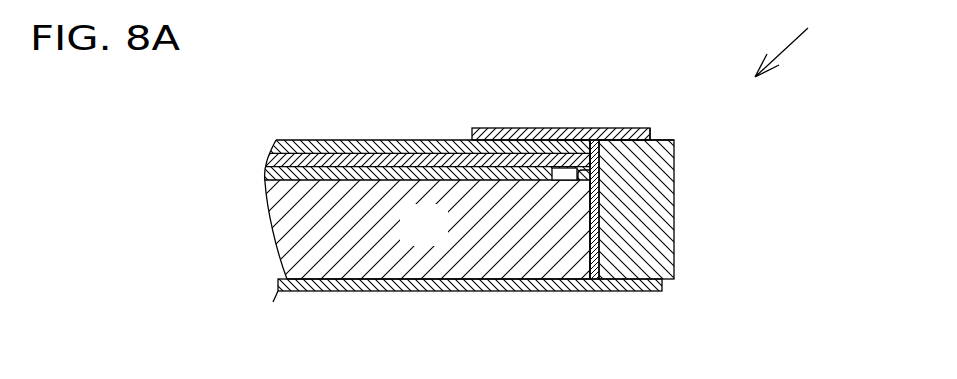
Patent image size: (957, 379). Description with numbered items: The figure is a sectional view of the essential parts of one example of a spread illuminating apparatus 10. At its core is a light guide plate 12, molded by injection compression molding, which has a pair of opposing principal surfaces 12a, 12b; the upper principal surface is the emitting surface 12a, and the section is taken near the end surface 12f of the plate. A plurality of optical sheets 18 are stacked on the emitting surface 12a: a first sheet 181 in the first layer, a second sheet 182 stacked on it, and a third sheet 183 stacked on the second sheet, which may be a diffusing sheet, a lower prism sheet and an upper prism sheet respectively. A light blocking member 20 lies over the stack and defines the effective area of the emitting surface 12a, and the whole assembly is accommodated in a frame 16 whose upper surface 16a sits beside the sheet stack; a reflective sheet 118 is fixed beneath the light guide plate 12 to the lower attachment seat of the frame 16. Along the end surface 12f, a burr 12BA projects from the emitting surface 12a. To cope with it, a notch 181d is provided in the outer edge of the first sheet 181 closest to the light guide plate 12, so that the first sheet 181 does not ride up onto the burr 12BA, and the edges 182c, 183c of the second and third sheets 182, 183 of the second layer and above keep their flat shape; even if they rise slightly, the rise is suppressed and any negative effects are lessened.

The spread illuminating apparatus 10 is at (795, 44).
The light guide plate 12 is at (442, 239).
The emitting surface 12a is at (441, 180).
The principal surface 12b is at (403, 280).
The end surface 12f is at (594, 246).
The burr 12BA is at (592, 173).
The frame 16 is at (675, 185).
The upper surface of frame member 16a is at (652, 134).
The optical sheets 18 is at (425, 94).
The first sheet 181 is at (432, 67).
The second sheet 182 is at (340, 155).
The third sheet 183 is at (384, 141).
The notch 181d is at (600, 192).
The edge 182c is at (627, 140).
The edge 183c is at (601, 140).
The light blocking member 20 is at (548, 128).
The reflective sheet 118 is at (523, 292).